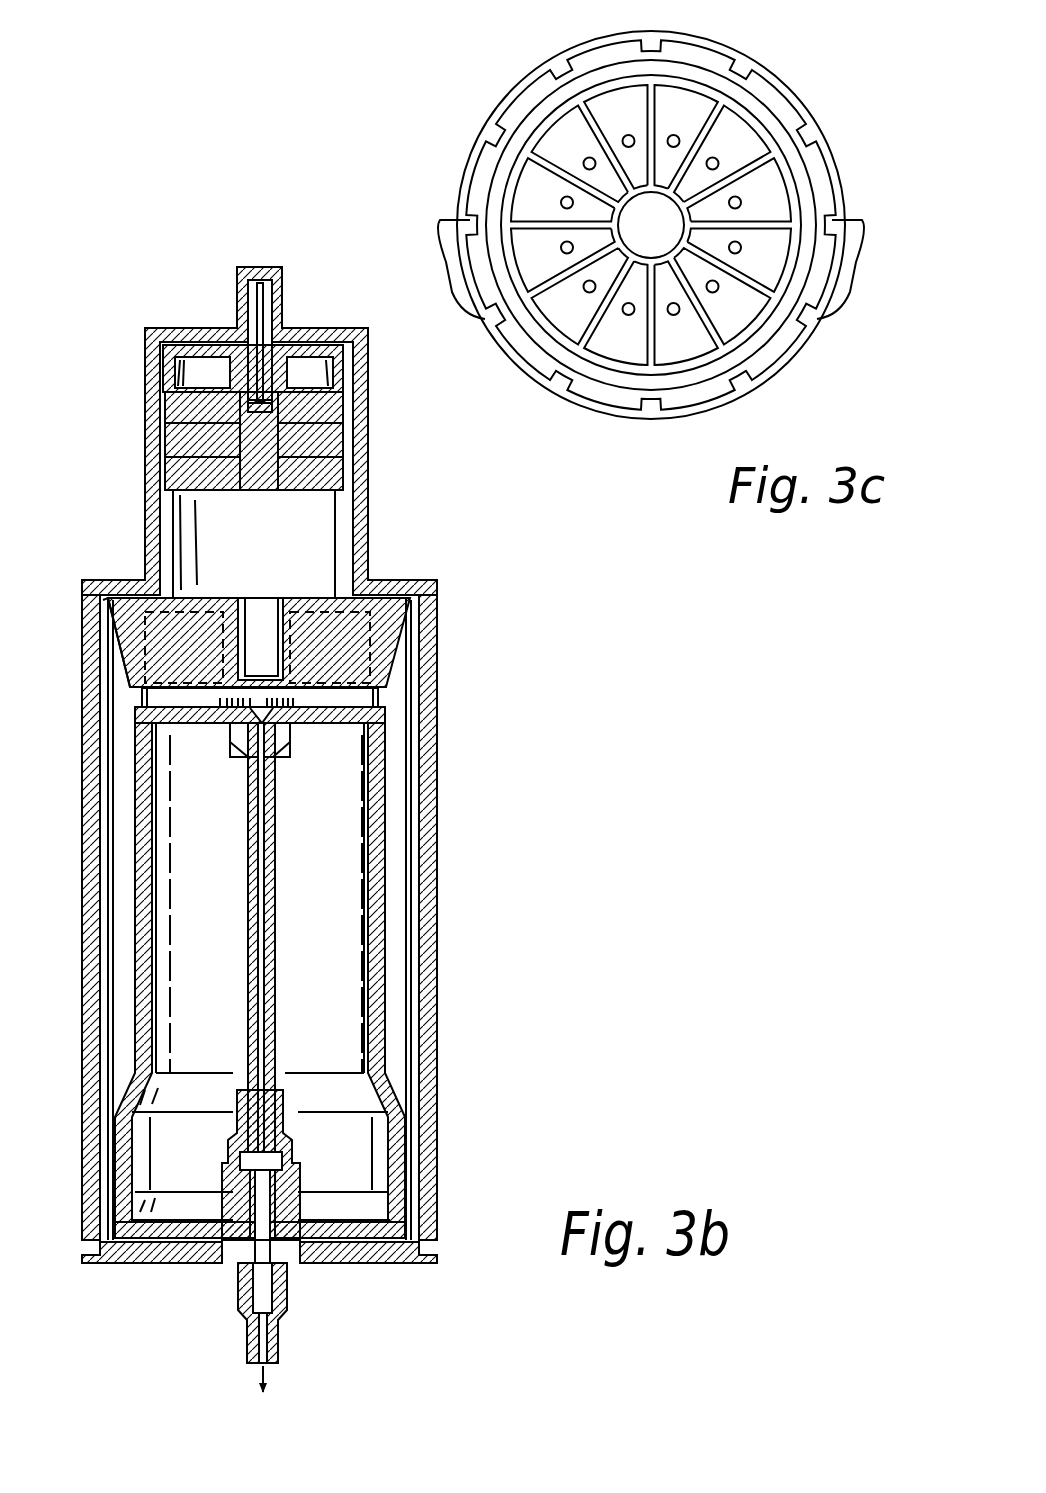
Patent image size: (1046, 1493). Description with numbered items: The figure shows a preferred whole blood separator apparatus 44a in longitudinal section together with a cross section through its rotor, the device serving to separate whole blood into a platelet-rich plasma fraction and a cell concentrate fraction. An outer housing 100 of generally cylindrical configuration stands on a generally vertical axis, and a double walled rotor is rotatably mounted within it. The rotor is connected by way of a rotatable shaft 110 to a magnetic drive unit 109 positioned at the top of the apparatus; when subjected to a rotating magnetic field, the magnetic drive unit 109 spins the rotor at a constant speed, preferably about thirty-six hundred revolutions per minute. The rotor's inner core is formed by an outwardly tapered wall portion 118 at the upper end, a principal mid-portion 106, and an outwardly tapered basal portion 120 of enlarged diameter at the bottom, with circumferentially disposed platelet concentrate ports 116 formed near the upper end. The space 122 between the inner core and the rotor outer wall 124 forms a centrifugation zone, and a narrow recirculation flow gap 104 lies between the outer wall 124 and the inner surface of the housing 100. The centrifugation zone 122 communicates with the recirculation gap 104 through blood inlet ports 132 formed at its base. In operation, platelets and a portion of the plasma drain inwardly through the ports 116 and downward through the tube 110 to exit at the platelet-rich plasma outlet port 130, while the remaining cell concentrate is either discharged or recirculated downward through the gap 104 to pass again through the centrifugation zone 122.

In FIG. 3C, the whole blood separator apparatus 44a is at (506, 74).
In FIG. 3B, the whole blood separator apparatus 44a is at (440, 570).
In FIG. 3C, the outer housing 100 is at (742, 53).
In FIG. 3C, the recirculation flow gap 104 is at (657, 410).
In FIG. 3B, the recirculation flow gap 104 is at (432, 623).
In FIG. 3C, the principal mid-portion 106 is at (772, 346).
In FIG. 3B, the principal mid-portion 106 is at (392, 922).
In FIG. 3B, the magnetic drive unit 109 is at (142, 407).
In FIG. 3C, the rotatable shaft 110 is at (663, 217).
In FIG. 3B, the rotatable shaft 110 is at (275, 1003).
In FIG. 3C, the platelet concentrate ports 116 is at (472, 221).
In FIG. 3B, the platelet concentrate ports 116 is at (137, 700).
In FIG. 3B, the outwardly tapered wall portion 118 is at (118, 650).
In FIG. 3B, the outwardly tapered basal portion 120 is at (410, 1105).
In FIG. 3B, the centrifugation zone 122 is at (127, 763).
In FIG. 3B, the rotor outer wall 124 is at (413, 757).
In FIG. 3B, the platelet-rich plasma outlet port 130 is at (280, 1335).
In FIG. 3B, the blood inlet ports 132 is at (85, 1243).